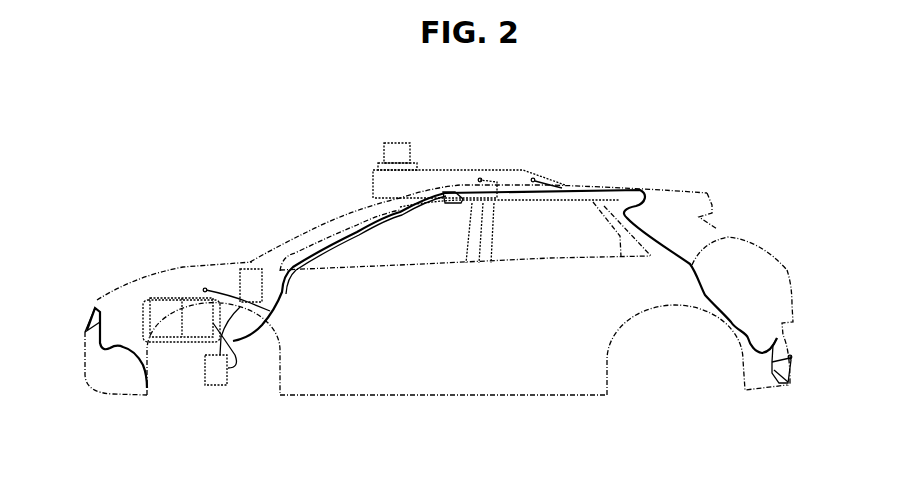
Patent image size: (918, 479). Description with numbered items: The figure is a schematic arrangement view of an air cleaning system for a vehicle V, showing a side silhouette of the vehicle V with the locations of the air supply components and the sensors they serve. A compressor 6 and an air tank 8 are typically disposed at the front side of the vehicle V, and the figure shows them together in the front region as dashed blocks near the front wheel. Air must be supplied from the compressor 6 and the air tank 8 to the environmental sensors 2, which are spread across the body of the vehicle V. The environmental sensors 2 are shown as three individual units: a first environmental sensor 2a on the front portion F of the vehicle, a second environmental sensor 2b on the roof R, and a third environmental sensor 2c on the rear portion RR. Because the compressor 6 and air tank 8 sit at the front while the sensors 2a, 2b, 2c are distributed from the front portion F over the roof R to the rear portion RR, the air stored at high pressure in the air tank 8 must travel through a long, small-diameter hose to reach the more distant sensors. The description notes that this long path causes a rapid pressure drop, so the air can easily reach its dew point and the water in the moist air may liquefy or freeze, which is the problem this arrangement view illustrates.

The environmental sensor 2 is at (443, 269).
The environmental sensor 2a is at (97, 292).
The environmental sensor 2b is at (465, 165).
The environmental sensor 2c is at (816, 299).
The vehicle V is at (733, 236).
The roof R is at (573, 196).
The front portion F is at (93, 335).
The rear portion RR is at (778, 305).
The compressor 6 is at (195, 330).
The air tank 8 is at (216, 370).